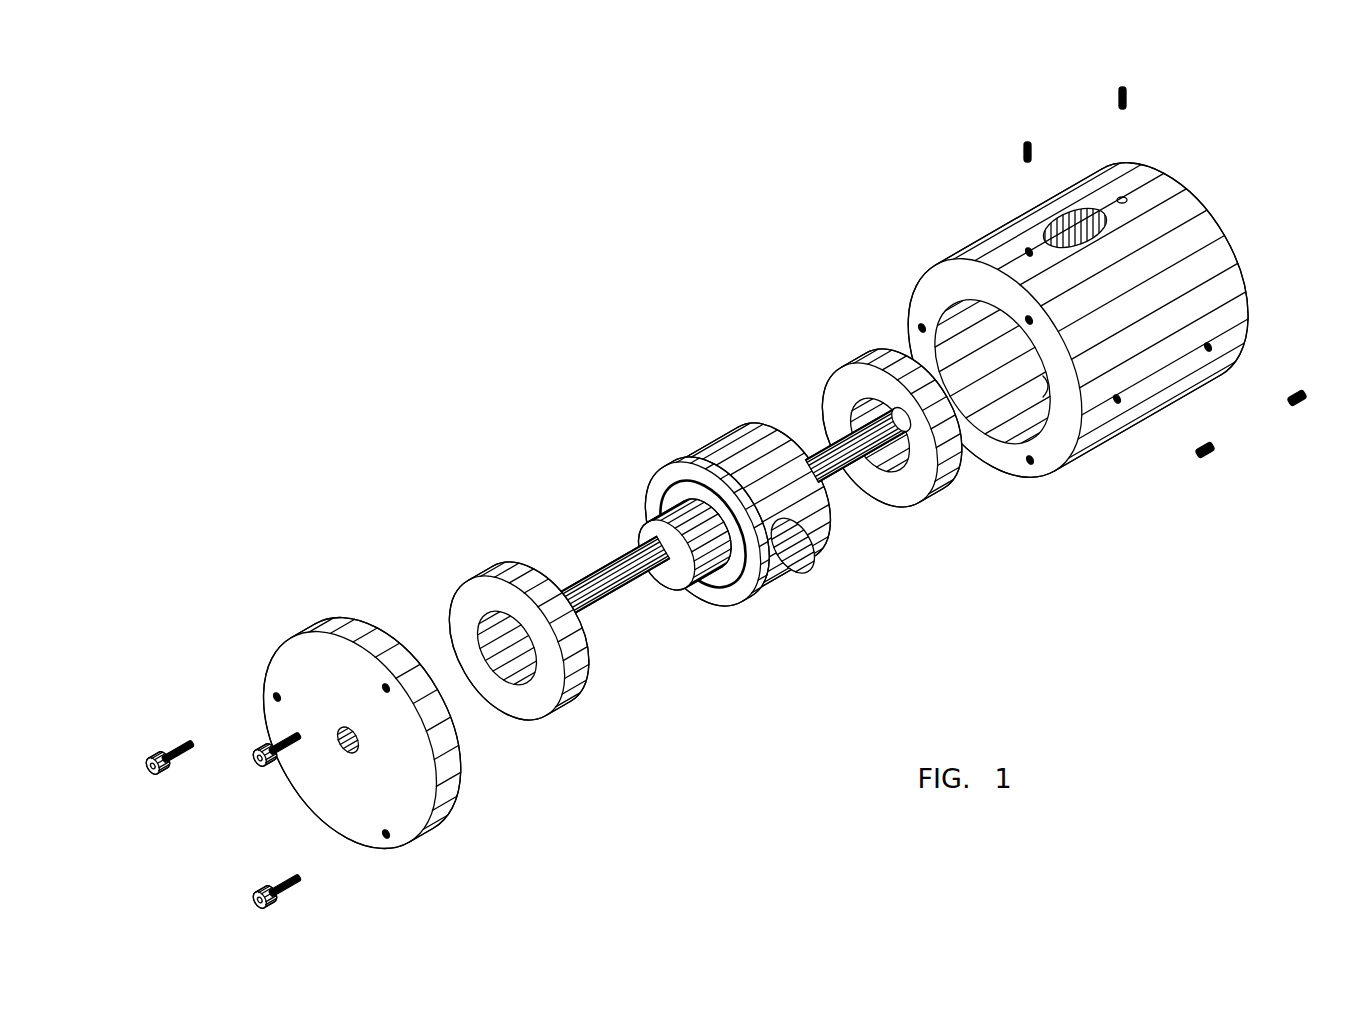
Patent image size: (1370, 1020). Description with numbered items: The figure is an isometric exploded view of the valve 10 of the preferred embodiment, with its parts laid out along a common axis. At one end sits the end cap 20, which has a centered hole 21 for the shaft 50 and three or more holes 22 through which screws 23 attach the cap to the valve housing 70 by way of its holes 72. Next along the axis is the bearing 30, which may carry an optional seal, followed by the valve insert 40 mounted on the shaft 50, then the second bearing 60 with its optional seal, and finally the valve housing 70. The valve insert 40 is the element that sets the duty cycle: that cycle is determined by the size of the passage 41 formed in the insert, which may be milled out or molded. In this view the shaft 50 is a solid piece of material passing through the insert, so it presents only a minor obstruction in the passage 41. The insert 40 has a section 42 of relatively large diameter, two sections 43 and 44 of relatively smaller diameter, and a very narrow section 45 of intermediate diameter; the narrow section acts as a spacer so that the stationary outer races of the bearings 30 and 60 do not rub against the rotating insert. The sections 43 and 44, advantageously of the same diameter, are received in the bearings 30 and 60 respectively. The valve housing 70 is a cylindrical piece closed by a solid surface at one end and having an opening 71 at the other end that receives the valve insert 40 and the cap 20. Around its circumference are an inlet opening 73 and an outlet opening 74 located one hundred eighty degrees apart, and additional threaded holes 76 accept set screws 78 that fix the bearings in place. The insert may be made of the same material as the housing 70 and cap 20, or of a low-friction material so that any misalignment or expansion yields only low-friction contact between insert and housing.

The valve 10 is at (846, 266).
The end cap 20 is at (362, 725).
The centered hole 21 is at (347, 751).
The holes 22 is at (279, 694).
The screws 23 is at (178, 737).
The bearing 30 is at (476, 568).
The valve insert 40 is at (736, 530).
The passage 41 is at (803, 570).
The section of relatively large diameter 42 is at (654, 456).
The section of relatively smaller diameter 43 is at (712, 587).
The section of relatively smaller diameter 44 is at (782, 452).
The narrow section of intermediate diameter 45 is at (742, 591).
The shaft 50 is at (598, 578).
The second bearing 60 is at (833, 357).
The valve housing 70 is at (1076, 345).
The opening 71 is at (996, 423).
The holes 72 is at (938, 268).
The inlet opening 73 is at (1078, 232).
The outlet opening 74 is at (1034, 418).
The threaded holes 76 is at (1028, 250).
The set screws 78 is at (1123, 84).